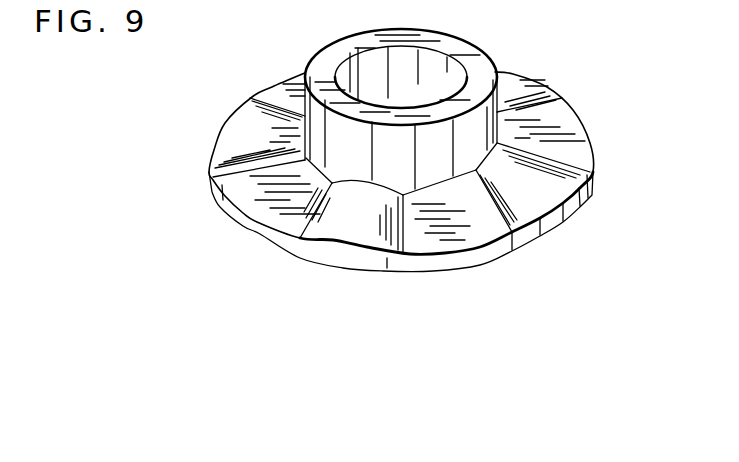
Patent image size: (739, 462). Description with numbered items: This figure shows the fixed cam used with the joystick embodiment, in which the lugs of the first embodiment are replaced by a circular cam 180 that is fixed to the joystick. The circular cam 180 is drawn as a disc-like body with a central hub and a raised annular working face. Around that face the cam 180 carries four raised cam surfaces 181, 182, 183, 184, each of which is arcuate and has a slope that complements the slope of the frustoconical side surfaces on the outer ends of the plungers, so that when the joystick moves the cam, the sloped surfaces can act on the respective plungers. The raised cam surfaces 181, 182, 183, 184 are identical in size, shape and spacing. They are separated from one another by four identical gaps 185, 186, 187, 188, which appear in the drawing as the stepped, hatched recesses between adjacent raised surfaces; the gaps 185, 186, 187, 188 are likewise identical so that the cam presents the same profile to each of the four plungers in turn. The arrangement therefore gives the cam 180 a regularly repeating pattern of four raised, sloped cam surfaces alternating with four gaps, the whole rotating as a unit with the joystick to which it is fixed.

The circular cam 180 is at (600, 175).
The raised cam surface 181 is at (568, 222).
The raised cam surface 182 is at (528, 75).
The raised cam surface 183 is at (222, 142).
The raised cam surface 184 is at (336, 230).
The gap 185 is at (582, 123).
The gap 186 is at (271, 92).
The gap 187 is at (258, 221).
The gap 188 is at (460, 241).